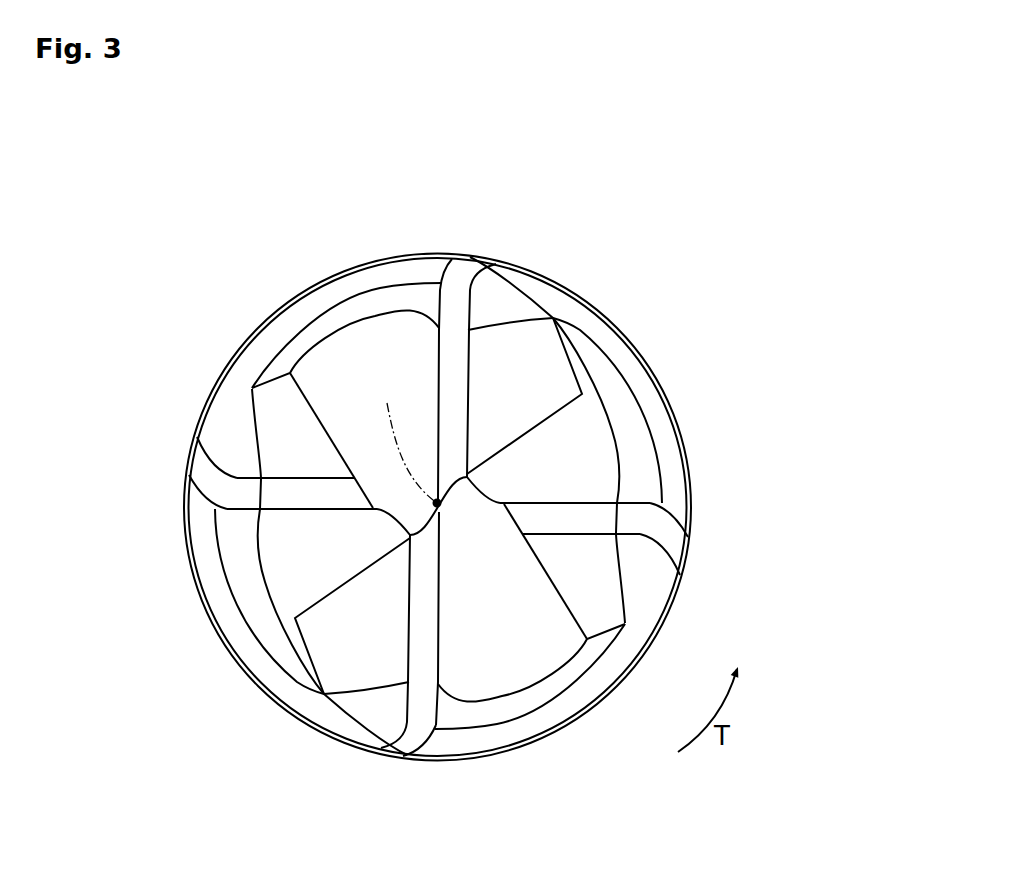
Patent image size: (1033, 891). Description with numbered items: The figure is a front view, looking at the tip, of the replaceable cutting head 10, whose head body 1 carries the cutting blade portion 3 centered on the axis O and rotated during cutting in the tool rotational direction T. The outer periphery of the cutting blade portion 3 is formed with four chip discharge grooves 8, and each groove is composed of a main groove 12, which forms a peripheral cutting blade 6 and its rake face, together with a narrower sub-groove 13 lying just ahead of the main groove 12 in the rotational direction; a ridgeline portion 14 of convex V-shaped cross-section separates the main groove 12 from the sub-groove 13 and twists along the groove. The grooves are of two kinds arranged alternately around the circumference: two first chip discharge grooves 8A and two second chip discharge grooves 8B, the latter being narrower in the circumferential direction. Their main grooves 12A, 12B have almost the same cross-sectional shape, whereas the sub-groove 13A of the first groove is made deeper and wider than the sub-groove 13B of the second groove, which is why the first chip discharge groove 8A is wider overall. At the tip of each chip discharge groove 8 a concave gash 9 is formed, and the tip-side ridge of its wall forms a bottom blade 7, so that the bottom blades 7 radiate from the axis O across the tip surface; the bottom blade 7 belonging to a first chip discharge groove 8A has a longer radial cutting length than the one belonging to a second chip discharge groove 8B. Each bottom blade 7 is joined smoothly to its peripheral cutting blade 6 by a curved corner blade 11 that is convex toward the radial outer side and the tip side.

The head body 1 is at (578, 205).
The cutting blade portion 3 is at (146, 365).
The peripheral cutting blade 6 is at (476, 262).
The bottom blade 7 is at (436, 396).
The chip discharge groove 8 is at (435, 509).
The first chip discharge groove 8A is at (350, 302).
The second chip discharge groove 8B is at (628, 427).
The gash 9 is at (335, 377).
The replaceable cutting head 10 is at (640, 170).
The corner blade 11 is at (441, 262).
The main groove 12 is at (451, 514).
The main groove of the first chip discharge groove 12A is at (397, 300).
The main groove of the second chip discharge groove 12B is at (650, 466).
The sub-groove 13 is at (426, 525).
The sub-groove of the first chip discharge groove 13A is at (232, 388).
The sub-groove of the second chip discharge groove 13B is at (545, 298).
The ridgeline portion 14 is at (317, 318).